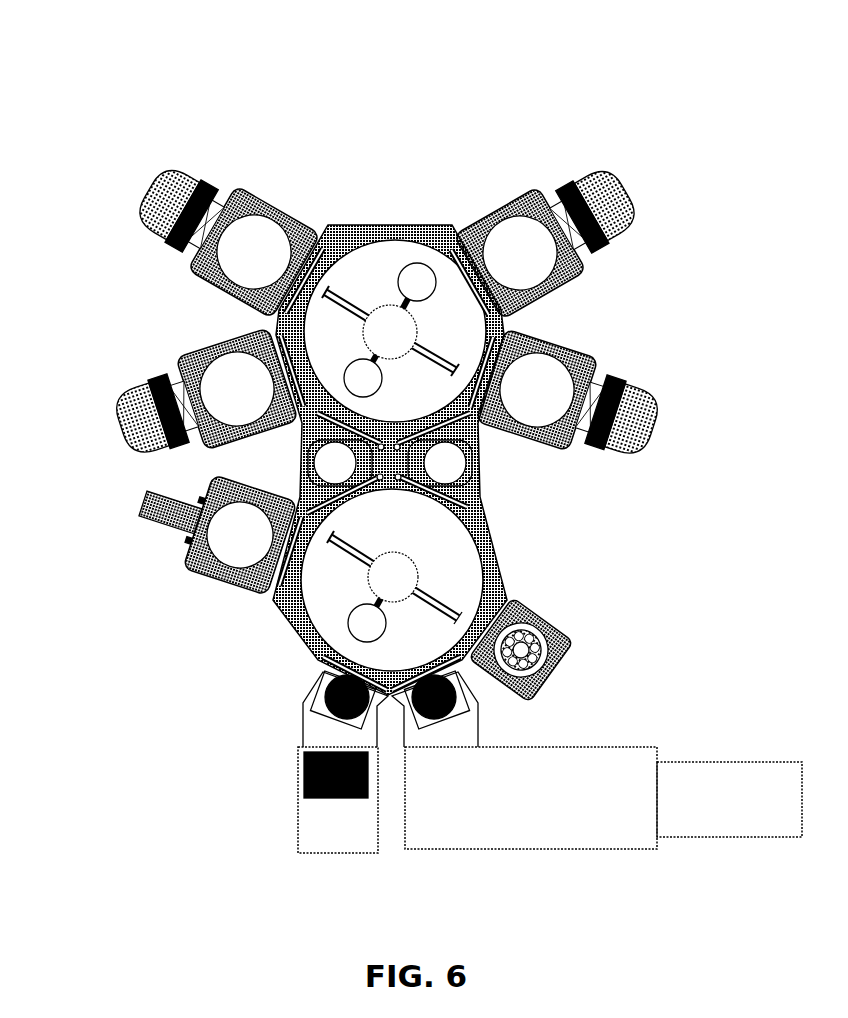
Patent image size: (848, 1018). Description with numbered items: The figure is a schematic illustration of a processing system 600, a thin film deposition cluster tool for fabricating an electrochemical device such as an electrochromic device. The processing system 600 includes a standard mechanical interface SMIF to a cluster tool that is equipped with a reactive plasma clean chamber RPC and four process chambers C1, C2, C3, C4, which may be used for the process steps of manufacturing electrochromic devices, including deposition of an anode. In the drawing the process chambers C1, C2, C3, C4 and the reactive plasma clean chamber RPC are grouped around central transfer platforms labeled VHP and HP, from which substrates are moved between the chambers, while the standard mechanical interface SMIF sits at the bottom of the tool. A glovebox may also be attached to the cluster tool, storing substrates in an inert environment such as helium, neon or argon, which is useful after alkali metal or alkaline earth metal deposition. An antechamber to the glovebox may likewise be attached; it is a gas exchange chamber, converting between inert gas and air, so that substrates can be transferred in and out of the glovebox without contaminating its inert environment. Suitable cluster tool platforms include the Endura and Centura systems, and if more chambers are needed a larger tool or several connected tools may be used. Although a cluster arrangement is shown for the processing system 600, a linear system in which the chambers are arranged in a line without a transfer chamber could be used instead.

The processing system 600 is at (97, 98).
The process chamber C1 is at (206, 399).
The process chamber C2 is at (226, 236).
The process chamber C3 is at (548, 237).
The process chamber C4 is at (567, 400).
The reactive plasma clean chamber RPC is at (217, 527).
The vacuum handling platform transfer chamber VHP is at (395, 331).
The handling platform transfer chamber HP is at (392, 580).
The standard mechanical interface SMIF is at (338, 800).